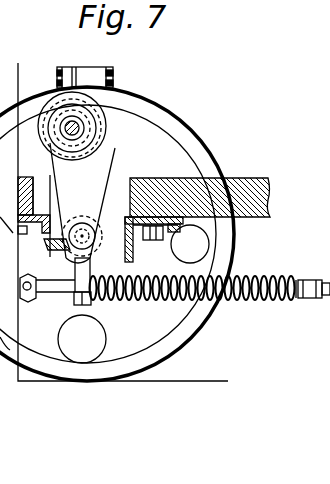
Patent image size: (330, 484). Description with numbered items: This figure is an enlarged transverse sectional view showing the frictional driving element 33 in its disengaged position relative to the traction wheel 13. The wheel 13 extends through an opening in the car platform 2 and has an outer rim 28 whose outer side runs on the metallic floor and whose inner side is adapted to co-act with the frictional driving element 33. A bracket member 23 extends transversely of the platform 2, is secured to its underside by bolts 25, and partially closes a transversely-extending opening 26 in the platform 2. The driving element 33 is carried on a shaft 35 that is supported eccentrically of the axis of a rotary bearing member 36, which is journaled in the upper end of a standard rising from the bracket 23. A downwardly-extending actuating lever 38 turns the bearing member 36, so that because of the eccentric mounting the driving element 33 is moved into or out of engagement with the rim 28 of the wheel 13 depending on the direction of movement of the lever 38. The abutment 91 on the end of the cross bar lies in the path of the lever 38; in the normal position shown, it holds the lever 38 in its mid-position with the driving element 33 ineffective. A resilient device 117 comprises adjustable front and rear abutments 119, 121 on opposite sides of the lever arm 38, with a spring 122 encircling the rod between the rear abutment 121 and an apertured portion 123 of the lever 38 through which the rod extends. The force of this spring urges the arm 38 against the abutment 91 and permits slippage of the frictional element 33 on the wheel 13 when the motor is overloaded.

The platform 2 is at (250, 178).
The traction wheel 13 is at (236, 229).
The bracket member 23 is at (133, 250).
The bolts 25 is at (205, 239).
The transversely-extending opening 26 is at (124, 182).
The outer rim 28 is at (199, 157).
The frictional driving element 33 is at (100, 122).
The shaft 35 is at (75, 127).
The rotary bearing member 36 is at (110, 127).
The actuating lever 38 is at (96, 171).
The abutment 91 is at (52, 245).
The resilient device 117 is at (233, 279).
The front abutment 119 is at (27, 296).
The rear abutment 121 is at (318, 302).
The spring 122 is at (236, 298).
The apertured portion 123 is at (88, 300).